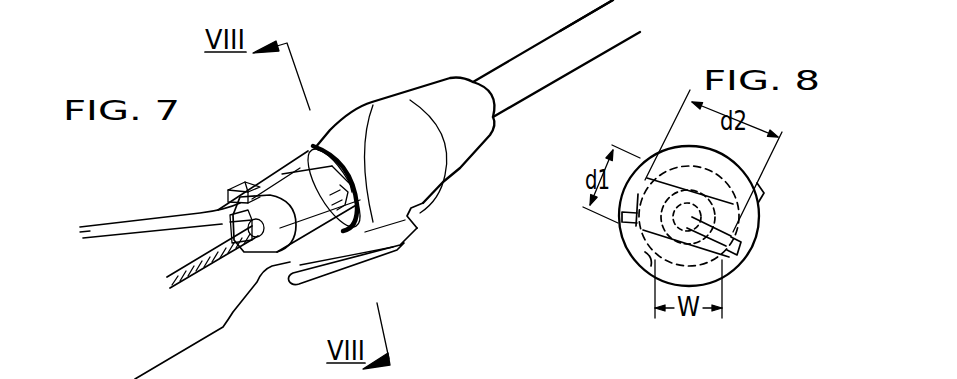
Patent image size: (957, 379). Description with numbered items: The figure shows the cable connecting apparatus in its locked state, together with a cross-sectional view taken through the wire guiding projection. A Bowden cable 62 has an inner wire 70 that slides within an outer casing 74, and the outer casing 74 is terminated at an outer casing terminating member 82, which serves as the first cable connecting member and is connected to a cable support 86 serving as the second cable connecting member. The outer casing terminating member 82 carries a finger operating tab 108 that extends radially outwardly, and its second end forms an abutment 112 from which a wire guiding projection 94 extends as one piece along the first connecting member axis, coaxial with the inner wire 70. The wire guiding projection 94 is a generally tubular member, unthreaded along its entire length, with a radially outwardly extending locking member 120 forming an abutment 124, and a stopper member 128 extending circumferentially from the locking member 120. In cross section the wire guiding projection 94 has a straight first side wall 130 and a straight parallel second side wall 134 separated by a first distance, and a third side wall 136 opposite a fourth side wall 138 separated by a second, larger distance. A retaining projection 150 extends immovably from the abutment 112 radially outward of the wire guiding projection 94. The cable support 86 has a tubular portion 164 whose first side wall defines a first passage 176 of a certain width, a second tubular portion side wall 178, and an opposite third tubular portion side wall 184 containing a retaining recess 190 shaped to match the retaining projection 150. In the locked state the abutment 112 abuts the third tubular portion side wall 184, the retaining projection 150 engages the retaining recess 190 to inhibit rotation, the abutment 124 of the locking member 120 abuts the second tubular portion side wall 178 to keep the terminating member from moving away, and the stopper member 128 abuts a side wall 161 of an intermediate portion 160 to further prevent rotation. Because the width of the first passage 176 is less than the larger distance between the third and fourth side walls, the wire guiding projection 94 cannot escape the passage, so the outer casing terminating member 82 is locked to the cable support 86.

In FIG. 7, the Bowden cable 62 is at (523, 32).
In FIG. 7, the inner wire 70 is at (204, 269).
In FIG. 7, the outer casing 74 is at (560, 62).
In FIG. 7, the outer casing terminating member 82 is at (407, 70).
In FIG. 7, the cable support 86 is at (77, 220).
In FIG. 7, the wire guiding projection 94 is at (278, 276).
In FIG. 7, the finger operating tab 108 is at (367, 254).
In FIG. 7, the abutment 112 is at (315, 146).
In FIG. 7, the locking member 120 is at (242, 230).
In FIG. 7, the abutment 124 is at (236, 188).
In FIG. 7, the stopper member 128 is at (224, 203).
In FIG. 8, the first side wall 130 is at (687, 172).
In FIG. 8, the second side wall 134 is at (680, 250).
In FIG. 8, the third side wall 136 is at (622, 232).
In FIG. 8, the fourth side wall 138 is at (751, 248).
In FIG. 7, the retaining projection 150 is at (350, 190).
In FIG. 7, the intermediate portion 160 is at (127, 336).
In FIG. 7, the side wall 161 is at (200, 215).
In FIG. 8, the tubular portion 164 is at (768, 177).
In FIG. 8, the first passage 176 is at (645, 262).
In FIG. 7, the second tubular portion side wall 178 is at (246, 188).
In FIG. 7, the third tubular portion side wall 184 is at (306, 148).
In FIG. 7, the retaining recess 190 is at (330, 162).